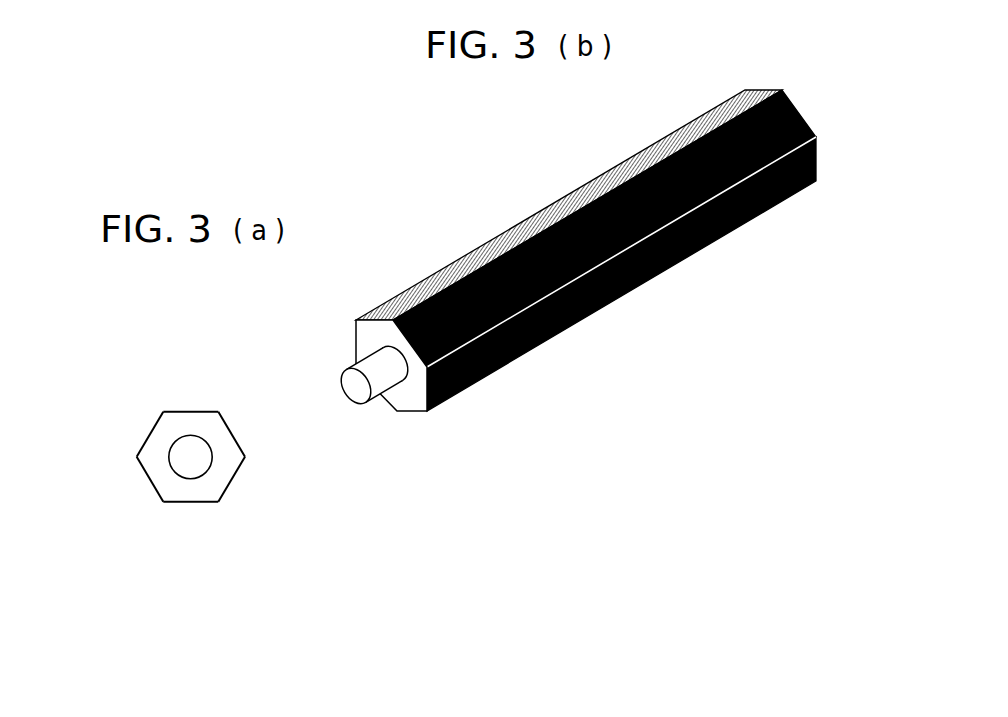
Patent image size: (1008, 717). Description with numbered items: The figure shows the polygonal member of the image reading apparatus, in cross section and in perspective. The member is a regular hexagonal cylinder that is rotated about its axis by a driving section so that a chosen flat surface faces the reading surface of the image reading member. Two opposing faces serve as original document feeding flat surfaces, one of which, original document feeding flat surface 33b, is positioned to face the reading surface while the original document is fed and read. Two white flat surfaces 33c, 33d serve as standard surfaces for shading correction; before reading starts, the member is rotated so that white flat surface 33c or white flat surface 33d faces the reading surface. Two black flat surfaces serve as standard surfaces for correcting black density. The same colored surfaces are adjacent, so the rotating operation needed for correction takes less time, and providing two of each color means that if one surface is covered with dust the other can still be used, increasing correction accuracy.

The original document feeding flat surface 33b is at (190, 502).
The white flat surface 33c is at (155, 423).
The white flat surface 33d is at (148, 482).